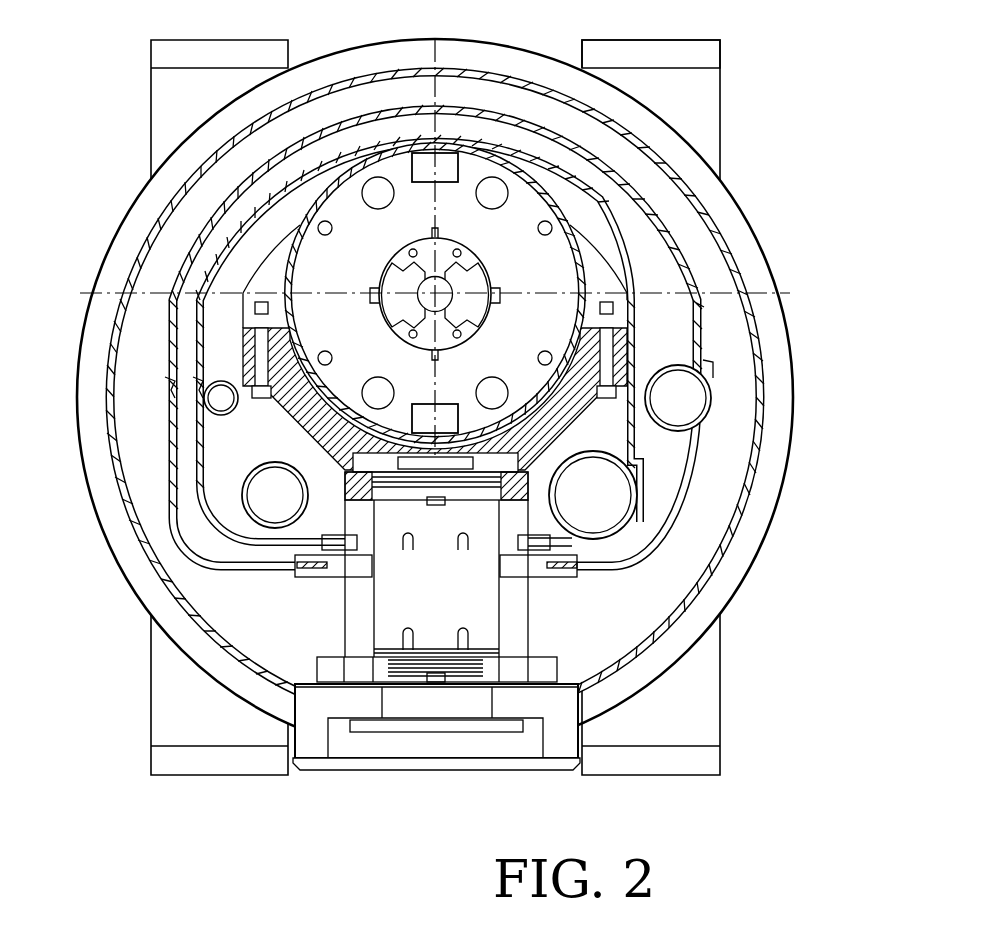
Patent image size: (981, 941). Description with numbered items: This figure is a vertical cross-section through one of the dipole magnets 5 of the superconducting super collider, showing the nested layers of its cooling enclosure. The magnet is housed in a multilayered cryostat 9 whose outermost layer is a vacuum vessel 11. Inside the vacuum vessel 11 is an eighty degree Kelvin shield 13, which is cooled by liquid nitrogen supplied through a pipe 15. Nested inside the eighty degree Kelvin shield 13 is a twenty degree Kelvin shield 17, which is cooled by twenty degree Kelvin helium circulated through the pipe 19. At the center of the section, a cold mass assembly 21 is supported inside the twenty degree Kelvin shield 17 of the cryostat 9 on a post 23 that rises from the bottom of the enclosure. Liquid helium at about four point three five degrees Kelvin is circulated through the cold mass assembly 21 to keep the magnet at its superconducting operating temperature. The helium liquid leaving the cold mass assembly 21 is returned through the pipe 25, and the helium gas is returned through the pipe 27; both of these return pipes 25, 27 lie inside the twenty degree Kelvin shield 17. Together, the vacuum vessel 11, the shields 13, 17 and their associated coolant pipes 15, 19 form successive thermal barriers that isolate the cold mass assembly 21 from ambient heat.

The dipole magnet 5 is at (798, 73).
The multilayered cryostat 9 is at (787, 472).
The vacuum vessel 11 is at (148, 243).
The 80° K. shield 13 is at (692, 283).
The pipe 15 is at (683, 366).
The 20° K. shield 17 is at (193, 428).
The pipe 19 is at (637, 520).
The cold mass assembly 21 is at (328, 258).
The post 23 is at (400, 602).
The pipe 25 is at (221, 381).
The pipe 27 is at (243, 507).